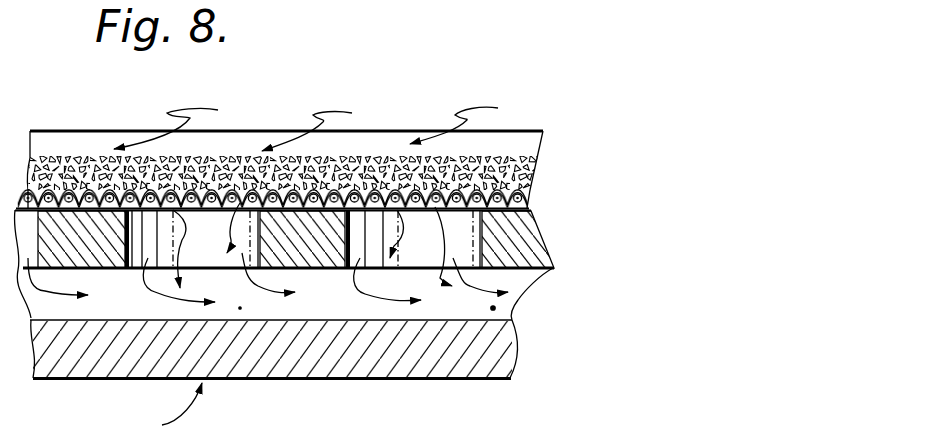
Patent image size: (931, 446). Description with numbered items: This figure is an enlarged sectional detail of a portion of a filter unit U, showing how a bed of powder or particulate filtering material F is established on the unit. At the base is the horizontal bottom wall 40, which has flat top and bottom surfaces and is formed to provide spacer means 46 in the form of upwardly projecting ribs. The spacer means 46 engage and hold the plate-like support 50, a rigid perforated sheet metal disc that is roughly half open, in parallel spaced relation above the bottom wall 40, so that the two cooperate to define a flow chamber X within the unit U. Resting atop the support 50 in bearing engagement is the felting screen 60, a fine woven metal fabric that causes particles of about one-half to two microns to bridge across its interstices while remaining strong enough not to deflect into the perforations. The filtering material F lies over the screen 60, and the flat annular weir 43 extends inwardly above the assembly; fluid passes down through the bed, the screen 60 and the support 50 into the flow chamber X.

The weir 43 is at (517, 144).
The filtering material F is at (541, 165).
The felting screen 60 is at (527, 189).
The plate-like support 50 is at (533, 240).
The spacer means 46 is at (510, 278).
The flow chamber X is at (495, 308).
The bottom wall 40 is at (502, 352).
The unit U is at (167, 411).